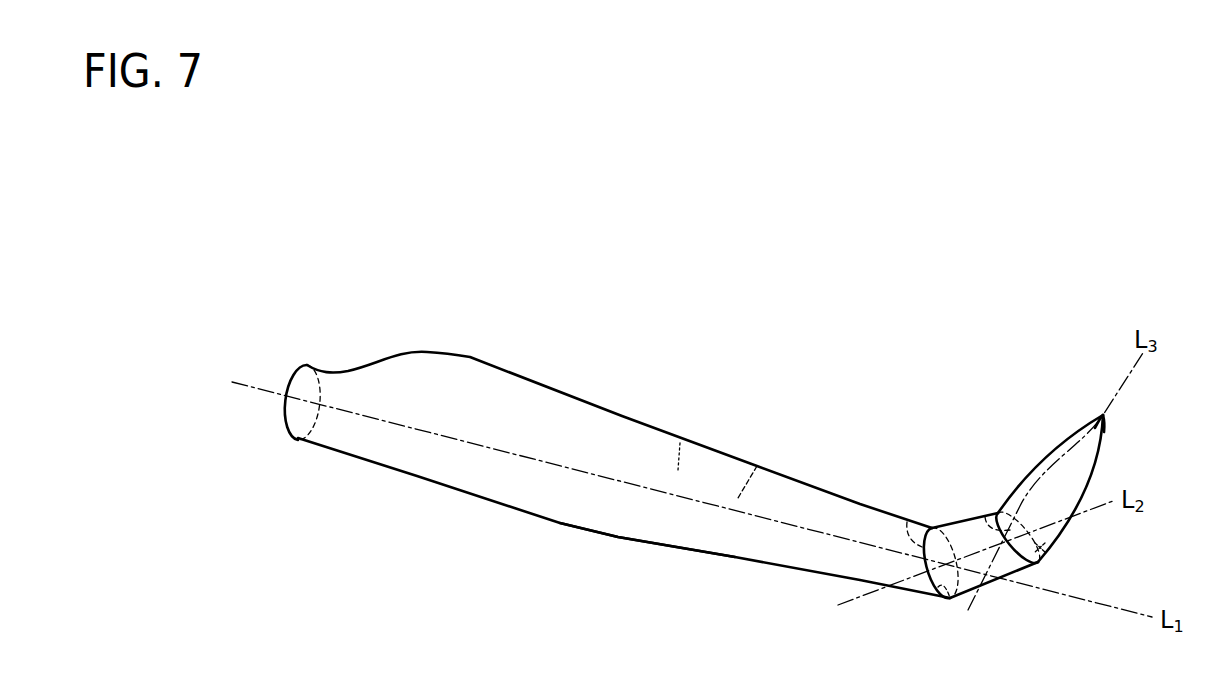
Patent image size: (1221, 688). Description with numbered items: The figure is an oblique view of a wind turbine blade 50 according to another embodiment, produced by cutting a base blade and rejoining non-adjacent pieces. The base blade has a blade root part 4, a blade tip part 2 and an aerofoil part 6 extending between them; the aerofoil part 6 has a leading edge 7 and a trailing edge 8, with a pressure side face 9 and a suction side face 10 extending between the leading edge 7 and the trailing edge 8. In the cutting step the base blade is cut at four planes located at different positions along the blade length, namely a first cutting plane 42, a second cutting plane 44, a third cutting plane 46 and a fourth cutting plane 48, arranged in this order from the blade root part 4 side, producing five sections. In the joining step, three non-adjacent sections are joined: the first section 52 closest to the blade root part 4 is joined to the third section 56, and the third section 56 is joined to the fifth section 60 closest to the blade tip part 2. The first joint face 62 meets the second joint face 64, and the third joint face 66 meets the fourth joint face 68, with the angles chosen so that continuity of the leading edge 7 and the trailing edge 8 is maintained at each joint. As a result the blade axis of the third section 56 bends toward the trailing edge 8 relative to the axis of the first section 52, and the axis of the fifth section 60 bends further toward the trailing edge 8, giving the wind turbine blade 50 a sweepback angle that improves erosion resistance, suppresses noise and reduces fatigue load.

The blade tip part 2 is at (1107, 423).
The blade root part 4 is at (313, 433).
The aerofoil part 6 is at (430, 460).
The leading edge 7 is at (618, 538).
The trailing edge 8 is at (622, 417).
The pressure side face 9 is at (680, 443).
The suction side face 10 is at (757, 466).
The wind turbine blade 50 is at (782, 298).
The first section 52 is at (735, 543).
The third section 56 is at (977, 582).
The fifth section 60 is at (1055, 455).
The first joint face 62 is at (947, 580).
The second joint face 64 is at (907, 522).
The third joint face 66 is at (1048, 548).
The fourth joint face 68 is at (985, 517).
The first cutting plane 42 is at (944, 591).
The second cutting plane 44 is at (932, 560).
The third cutting plane 46 is at (1040, 547).
The fourth cutting plane 48 is at (1012, 537).